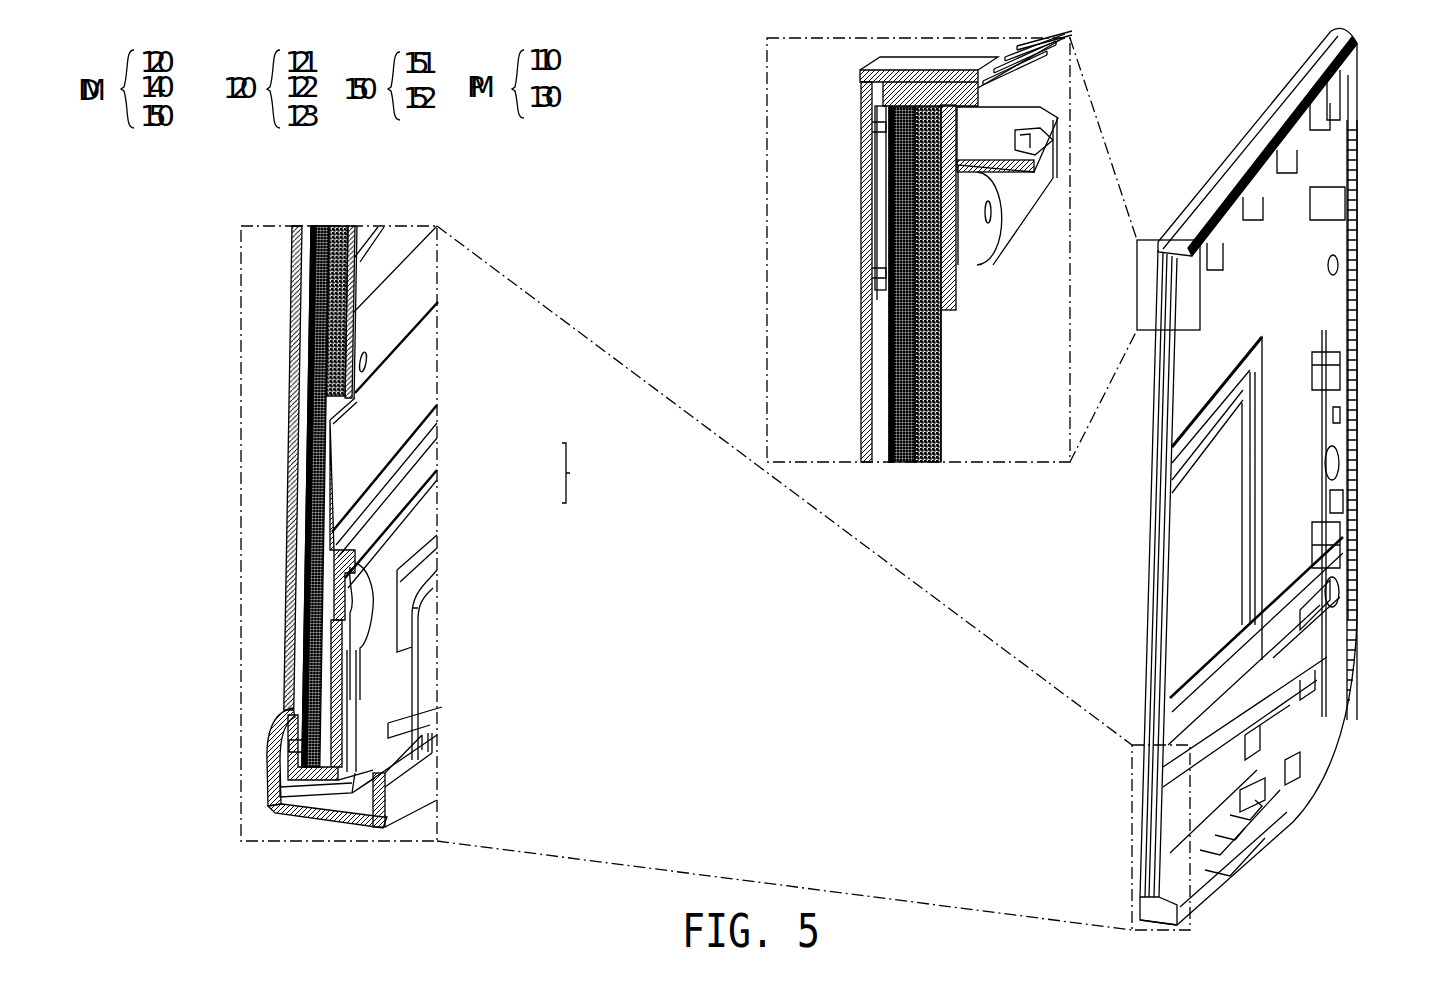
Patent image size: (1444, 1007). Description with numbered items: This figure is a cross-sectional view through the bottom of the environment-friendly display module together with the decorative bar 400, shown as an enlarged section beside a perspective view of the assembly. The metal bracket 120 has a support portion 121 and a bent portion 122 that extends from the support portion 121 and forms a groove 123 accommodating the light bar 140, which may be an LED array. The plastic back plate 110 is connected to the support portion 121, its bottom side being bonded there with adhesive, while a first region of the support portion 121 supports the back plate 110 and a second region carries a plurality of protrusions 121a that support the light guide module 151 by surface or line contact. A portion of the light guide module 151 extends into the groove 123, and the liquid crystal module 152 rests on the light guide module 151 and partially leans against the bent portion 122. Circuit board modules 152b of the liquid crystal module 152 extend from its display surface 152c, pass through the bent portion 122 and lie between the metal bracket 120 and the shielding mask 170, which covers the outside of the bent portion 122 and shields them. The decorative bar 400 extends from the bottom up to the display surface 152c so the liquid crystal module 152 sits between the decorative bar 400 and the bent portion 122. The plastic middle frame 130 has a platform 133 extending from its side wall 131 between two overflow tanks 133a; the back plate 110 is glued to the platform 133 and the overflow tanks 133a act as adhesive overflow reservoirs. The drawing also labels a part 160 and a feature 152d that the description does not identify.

The plastic back plate 110 is at (348, 226).
The metal bracket 120 is at (1307, 600).
The support portion 121 is at (402, 337).
The protrusions 121a is at (293, 693).
The bent portion 122 is at (278, 733).
The groove 123 is at (402, 797).
The plastic middle frame 130 is at (1253, 128).
The side wall 131 is at (878, 72).
The platform 133 is at (880, 202).
The overflow tanks 133a is at (872, 130).
The light bar 140 is at (366, 805).
The light guide module 151 is at (322, 226).
The liquid crystal module 152 is at (300, 226).
The circuit board modules 152b is at (372, 697).
The display surface 152c is at (288, 350).
The cover plate hook 152d is at (296, 728).
The window frame 160 is at (395, 240).
The shielding mask 170 is at (382, 649).
The decorative bar 400 is at (287, 748).